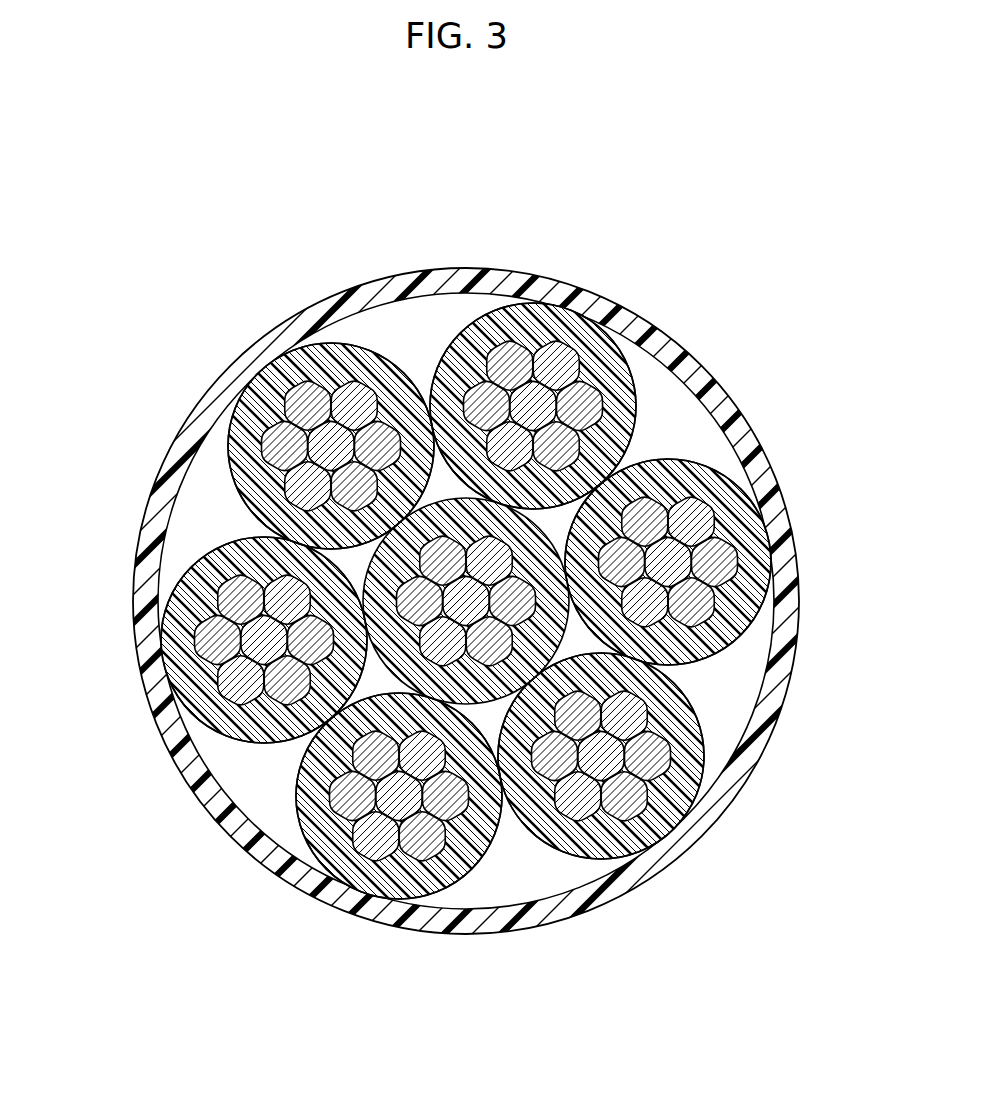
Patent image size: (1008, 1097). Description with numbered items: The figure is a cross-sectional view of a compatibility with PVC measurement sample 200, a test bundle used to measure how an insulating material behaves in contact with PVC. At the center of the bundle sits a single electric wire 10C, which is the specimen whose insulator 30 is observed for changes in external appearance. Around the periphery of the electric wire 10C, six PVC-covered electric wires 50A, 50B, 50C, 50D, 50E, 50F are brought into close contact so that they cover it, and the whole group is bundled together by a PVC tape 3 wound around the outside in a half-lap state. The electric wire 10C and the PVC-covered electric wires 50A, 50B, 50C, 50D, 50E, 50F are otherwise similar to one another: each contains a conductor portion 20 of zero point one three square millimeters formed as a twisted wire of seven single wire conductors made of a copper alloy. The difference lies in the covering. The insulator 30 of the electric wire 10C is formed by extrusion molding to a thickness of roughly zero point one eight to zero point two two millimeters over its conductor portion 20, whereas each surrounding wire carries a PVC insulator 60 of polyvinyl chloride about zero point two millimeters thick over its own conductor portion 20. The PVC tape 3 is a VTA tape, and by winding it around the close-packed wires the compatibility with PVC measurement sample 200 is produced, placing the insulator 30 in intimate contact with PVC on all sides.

The compatibility with PVC measurement sample 200 is at (640, 176).
The PVC tape 3 is at (752, 452).
The PVC insulator 60 is at (498, 318).
The conductor portion 20 is at (566, 348).
The electric wire 10C is at (543, 717).
The PVC-covered electric wire 50A is at (634, 378).
The PVC-covered electric wire 50B is at (715, 660).
The PVC-covered electric wire 50C is at (578, 860).
The PVC-covered electric wire 50D is at (285, 835).
The PVC-covered electric wire 50E is at (185, 570).
The PVC-covered electric wire 50F is at (351, 345).
The insulator 30 is at (287, 752).